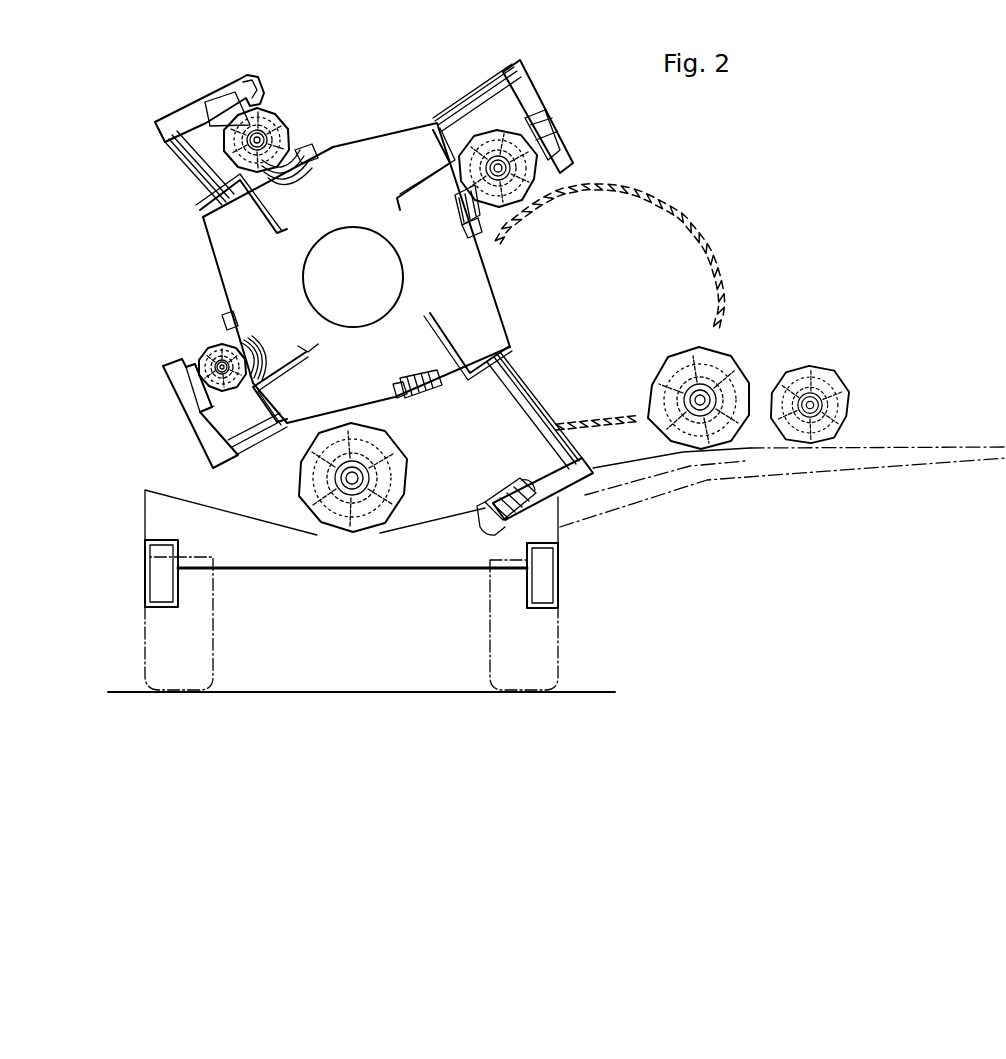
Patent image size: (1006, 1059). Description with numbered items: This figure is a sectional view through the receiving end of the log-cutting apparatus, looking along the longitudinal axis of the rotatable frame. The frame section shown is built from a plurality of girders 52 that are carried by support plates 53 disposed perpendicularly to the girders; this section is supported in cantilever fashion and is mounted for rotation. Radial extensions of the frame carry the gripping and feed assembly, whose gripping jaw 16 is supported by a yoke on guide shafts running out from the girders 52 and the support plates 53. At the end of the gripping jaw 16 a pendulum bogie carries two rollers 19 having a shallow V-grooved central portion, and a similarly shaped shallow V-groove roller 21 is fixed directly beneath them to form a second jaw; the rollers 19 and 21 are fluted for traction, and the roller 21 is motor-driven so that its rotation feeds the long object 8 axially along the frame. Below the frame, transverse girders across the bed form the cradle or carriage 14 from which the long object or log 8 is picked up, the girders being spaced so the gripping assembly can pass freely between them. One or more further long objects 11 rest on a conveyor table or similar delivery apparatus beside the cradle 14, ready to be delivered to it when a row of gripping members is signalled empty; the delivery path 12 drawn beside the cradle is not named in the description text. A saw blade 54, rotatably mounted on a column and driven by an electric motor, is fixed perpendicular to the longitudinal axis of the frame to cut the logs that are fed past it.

The long object or log 8 is at (217, 345).
The long objects 11 is at (733, 378).
The conveyor path 12 is at (780, 468).
The cradle or carriage 14 is at (412, 568).
The gripping jaw 16 is at (586, 476).
The rollers 19 is at (512, 486).
The shallow V-groove roller 21 is at (430, 393).
The girders 52 is at (455, 80).
The support plates 53 is at (395, 135).
The saw blade 54 is at (719, 260).